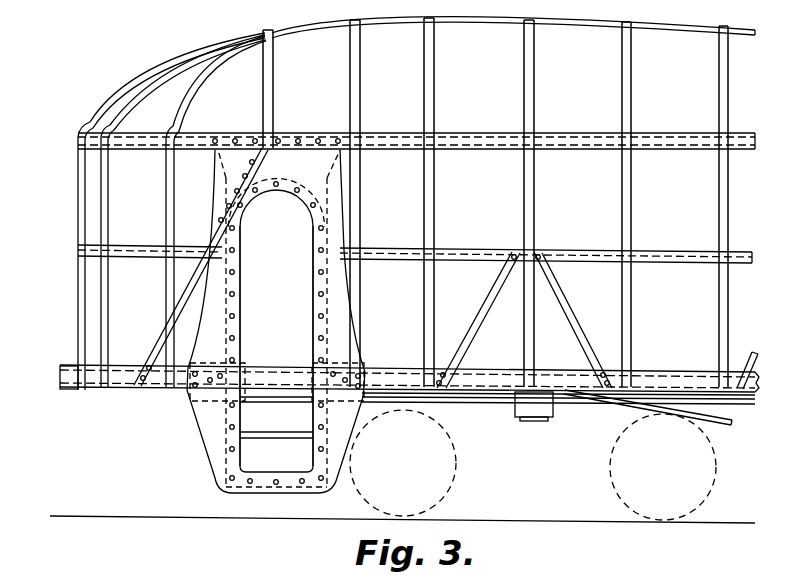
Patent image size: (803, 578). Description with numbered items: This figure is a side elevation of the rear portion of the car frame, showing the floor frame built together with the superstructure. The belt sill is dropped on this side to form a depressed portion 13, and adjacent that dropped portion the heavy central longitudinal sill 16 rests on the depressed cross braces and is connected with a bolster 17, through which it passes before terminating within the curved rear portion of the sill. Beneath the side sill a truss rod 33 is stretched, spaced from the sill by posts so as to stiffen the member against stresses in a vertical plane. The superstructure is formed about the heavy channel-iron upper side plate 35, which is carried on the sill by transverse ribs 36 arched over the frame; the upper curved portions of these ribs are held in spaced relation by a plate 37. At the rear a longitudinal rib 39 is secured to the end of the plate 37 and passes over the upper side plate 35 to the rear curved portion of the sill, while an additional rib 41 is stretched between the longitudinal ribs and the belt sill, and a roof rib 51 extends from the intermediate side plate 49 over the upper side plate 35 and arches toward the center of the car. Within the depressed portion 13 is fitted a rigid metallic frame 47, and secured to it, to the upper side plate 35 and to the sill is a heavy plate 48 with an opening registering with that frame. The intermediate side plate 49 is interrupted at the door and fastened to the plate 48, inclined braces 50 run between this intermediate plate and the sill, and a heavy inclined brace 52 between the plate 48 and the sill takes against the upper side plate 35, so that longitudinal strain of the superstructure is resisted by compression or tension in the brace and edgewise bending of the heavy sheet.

The depressed portion 13 is at (268, 316).
The central longitudinal sill 16 is at (466, 402).
The bolster 17 is at (540, 418).
The truss rod 33 is at (724, 423).
The upper side plate 35 is at (460, 144).
The transverse rib 36 is at (436, 218).
The plate 37 is at (553, 36).
The longitudinal rib 39 is at (77, 168).
The rib 41 is at (106, 304).
The metallic frame 47 is at (228, 306).
The plate 48 is at (346, 320).
The intermediate side plate 49 is at (560, 248).
The inclined brace 50 is at (572, 304).
The roof rib 51 is at (165, 181).
The inclined brace 52 is at (174, 318).